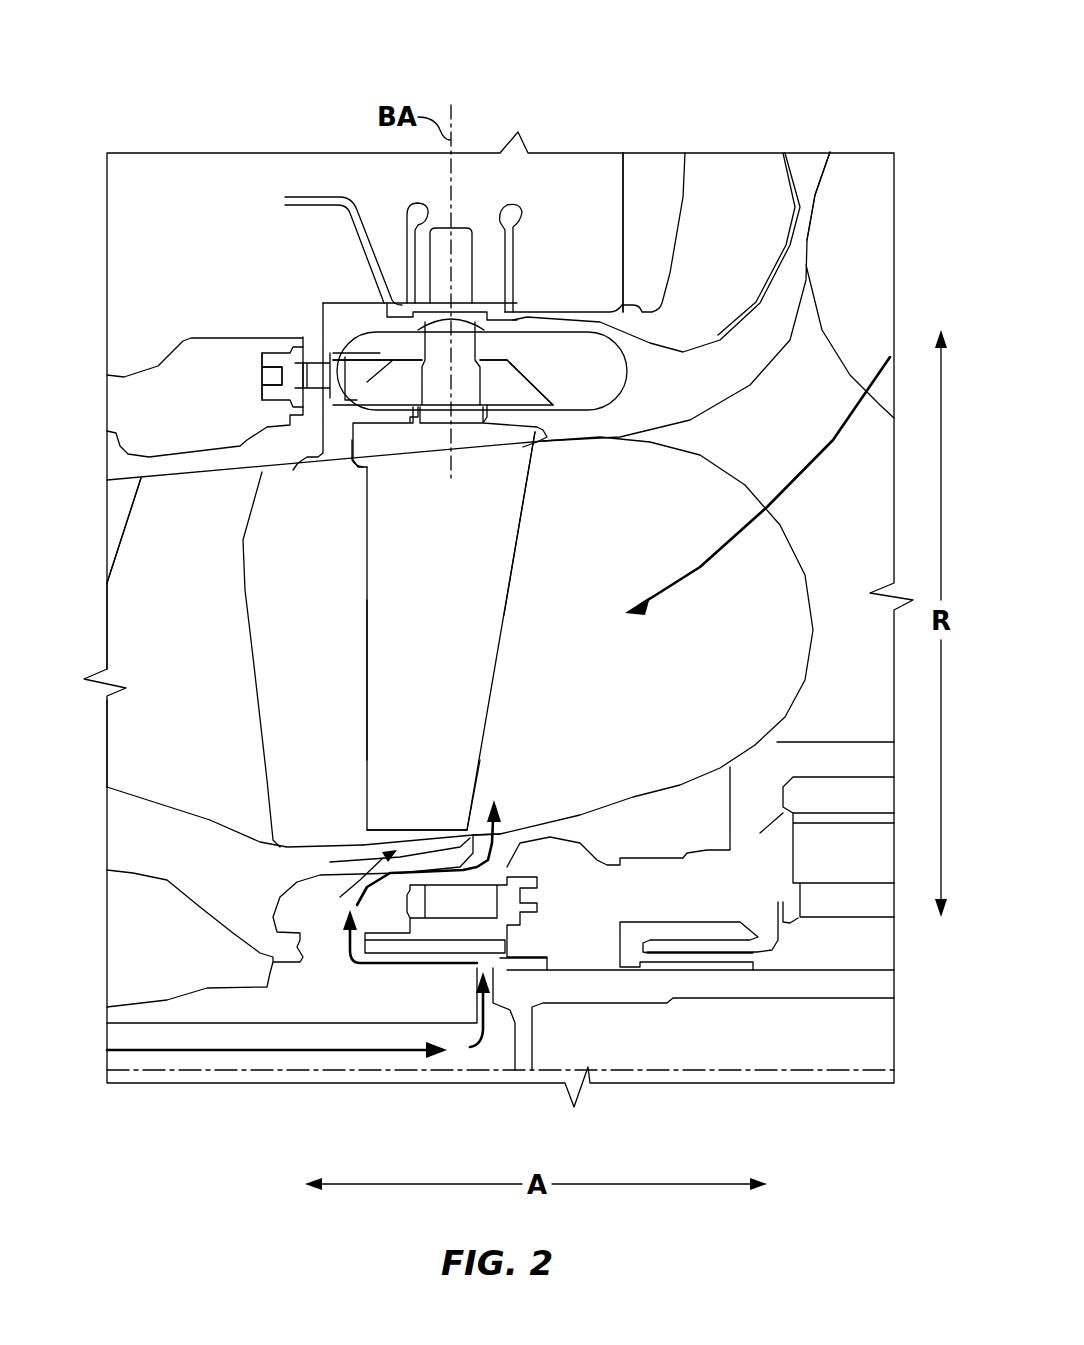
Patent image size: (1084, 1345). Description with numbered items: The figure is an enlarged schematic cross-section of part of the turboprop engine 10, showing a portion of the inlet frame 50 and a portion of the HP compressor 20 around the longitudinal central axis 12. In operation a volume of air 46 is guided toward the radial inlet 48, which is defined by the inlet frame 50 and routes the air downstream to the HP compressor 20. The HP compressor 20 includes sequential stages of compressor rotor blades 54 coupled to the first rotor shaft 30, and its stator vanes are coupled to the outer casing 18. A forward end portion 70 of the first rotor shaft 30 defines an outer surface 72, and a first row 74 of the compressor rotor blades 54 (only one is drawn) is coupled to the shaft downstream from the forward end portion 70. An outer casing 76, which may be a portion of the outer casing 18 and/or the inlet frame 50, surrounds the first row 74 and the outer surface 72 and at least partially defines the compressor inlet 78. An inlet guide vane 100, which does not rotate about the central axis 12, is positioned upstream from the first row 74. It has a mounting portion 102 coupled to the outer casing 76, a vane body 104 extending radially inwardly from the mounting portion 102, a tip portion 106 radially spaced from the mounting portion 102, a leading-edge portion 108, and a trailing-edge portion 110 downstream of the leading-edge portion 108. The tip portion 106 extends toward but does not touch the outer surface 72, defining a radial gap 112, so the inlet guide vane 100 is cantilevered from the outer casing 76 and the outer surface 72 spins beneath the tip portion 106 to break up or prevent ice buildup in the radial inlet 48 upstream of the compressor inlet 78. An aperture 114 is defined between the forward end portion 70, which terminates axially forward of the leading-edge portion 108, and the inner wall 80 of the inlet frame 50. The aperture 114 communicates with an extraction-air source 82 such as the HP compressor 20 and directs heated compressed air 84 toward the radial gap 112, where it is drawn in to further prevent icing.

The turboprop engine 10 is at (180, 55).
The central axis 12 is at (680, 1070).
The outer casing 18 is at (120, 398).
The HP compressor 20 is at (95, 771).
The first rotor shaft 30 is at (161, 867).
The air 46 is at (672, 581).
The radial inlet 48 is at (723, 642).
The inlet frame 50 is at (812, 140).
The compressor rotor blades 54 is at (163, 662).
The forward end portion 70 is at (351, 882).
The outer surface 72 is at (360, 850).
The first row 74 is at (93, 582).
The outer casing 76 is at (603, 200).
The compressor inlet 78 is at (283, 642).
The inner wall 80 is at (645, 795).
The extraction-air source 82 is at (97, 1062).
The heated compressed air 84 is at (400, 880).
The inlet guide vane 100 is at (418, 600).
The mounting portion 102 is at (500, 395).
The vane body 104 is at (500, 520).
The tip portion 106 is at (428, 815).
The leading-edge portion 108 is at (502, 617).
The trailing-edge portion 110 is at (364, 675).
The radial gap 112 is at (433, 838).
The aperture 114 is at (497, 835).